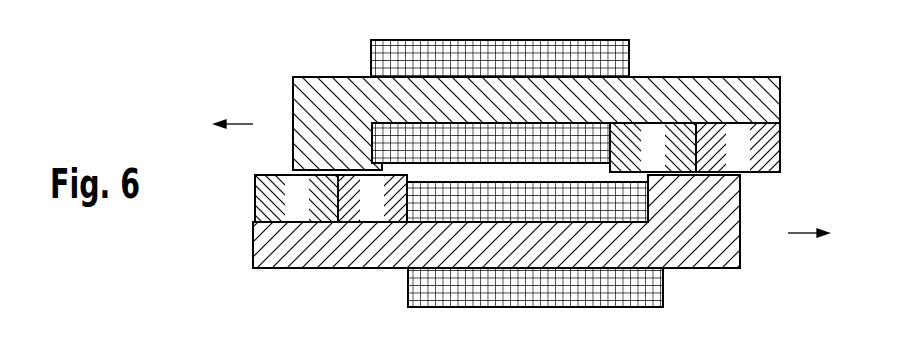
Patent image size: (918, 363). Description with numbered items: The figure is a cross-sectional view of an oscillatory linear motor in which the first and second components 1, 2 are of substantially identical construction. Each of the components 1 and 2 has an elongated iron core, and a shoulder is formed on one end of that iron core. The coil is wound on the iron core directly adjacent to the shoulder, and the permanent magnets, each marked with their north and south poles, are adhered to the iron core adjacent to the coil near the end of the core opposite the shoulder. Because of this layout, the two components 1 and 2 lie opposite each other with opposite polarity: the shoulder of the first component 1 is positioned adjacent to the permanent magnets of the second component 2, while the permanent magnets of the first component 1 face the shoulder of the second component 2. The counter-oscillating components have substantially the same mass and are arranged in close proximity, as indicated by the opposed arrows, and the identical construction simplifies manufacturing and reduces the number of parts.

The first component 1 is at (520, 251).
The second component 2 is at (511, 95).